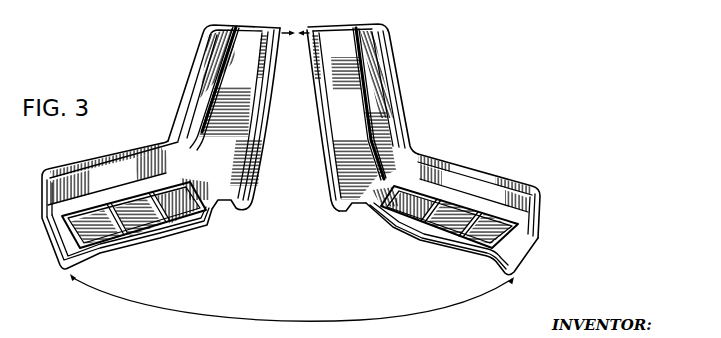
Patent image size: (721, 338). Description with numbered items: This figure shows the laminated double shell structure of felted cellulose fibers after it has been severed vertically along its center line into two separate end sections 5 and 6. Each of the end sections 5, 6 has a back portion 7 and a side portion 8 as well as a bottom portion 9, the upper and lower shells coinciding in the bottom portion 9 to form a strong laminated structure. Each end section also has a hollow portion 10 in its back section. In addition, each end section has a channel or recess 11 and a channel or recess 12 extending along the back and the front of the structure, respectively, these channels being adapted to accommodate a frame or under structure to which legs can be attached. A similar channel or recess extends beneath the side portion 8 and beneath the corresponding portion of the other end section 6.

The end section 5 is at (416, 116).
The end section 6 is at (164, 134).
The back portion 7 is at (345, 116).
The side portion 8 is at (479, 196).
The bottom portion 9 is at (423, 244).
The hollow portion 10 is at (328, 155).
The channel or recess 11 is at (351, 212).
The channel or recess 12 is at (490, 269).